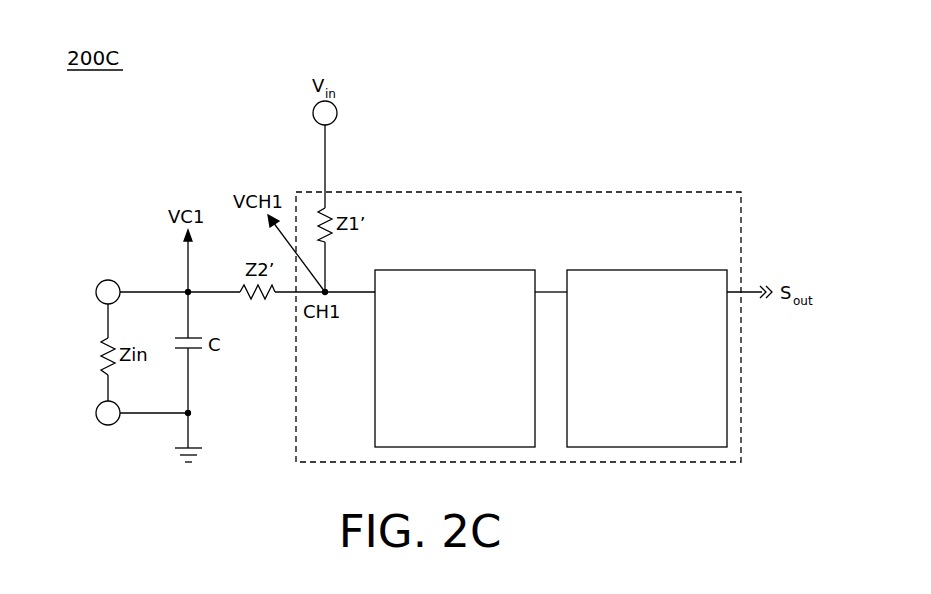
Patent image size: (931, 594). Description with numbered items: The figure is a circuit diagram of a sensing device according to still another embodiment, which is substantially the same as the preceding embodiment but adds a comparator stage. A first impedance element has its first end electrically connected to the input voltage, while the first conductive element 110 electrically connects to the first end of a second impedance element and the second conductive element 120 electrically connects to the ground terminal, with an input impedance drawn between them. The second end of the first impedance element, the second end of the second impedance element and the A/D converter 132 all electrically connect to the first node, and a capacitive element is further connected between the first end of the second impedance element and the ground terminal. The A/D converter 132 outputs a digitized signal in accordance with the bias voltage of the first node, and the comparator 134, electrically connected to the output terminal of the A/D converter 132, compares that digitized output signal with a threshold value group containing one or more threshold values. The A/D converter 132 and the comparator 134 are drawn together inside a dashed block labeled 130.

The first conductive element 110 is at (100, 282).
The second conductive element 120 is at (100, 403).
The detection circuit 130 is at (741, 249).
The A/D converter 132 is at (437, 385).
The comparator 134 is at (629, 385).